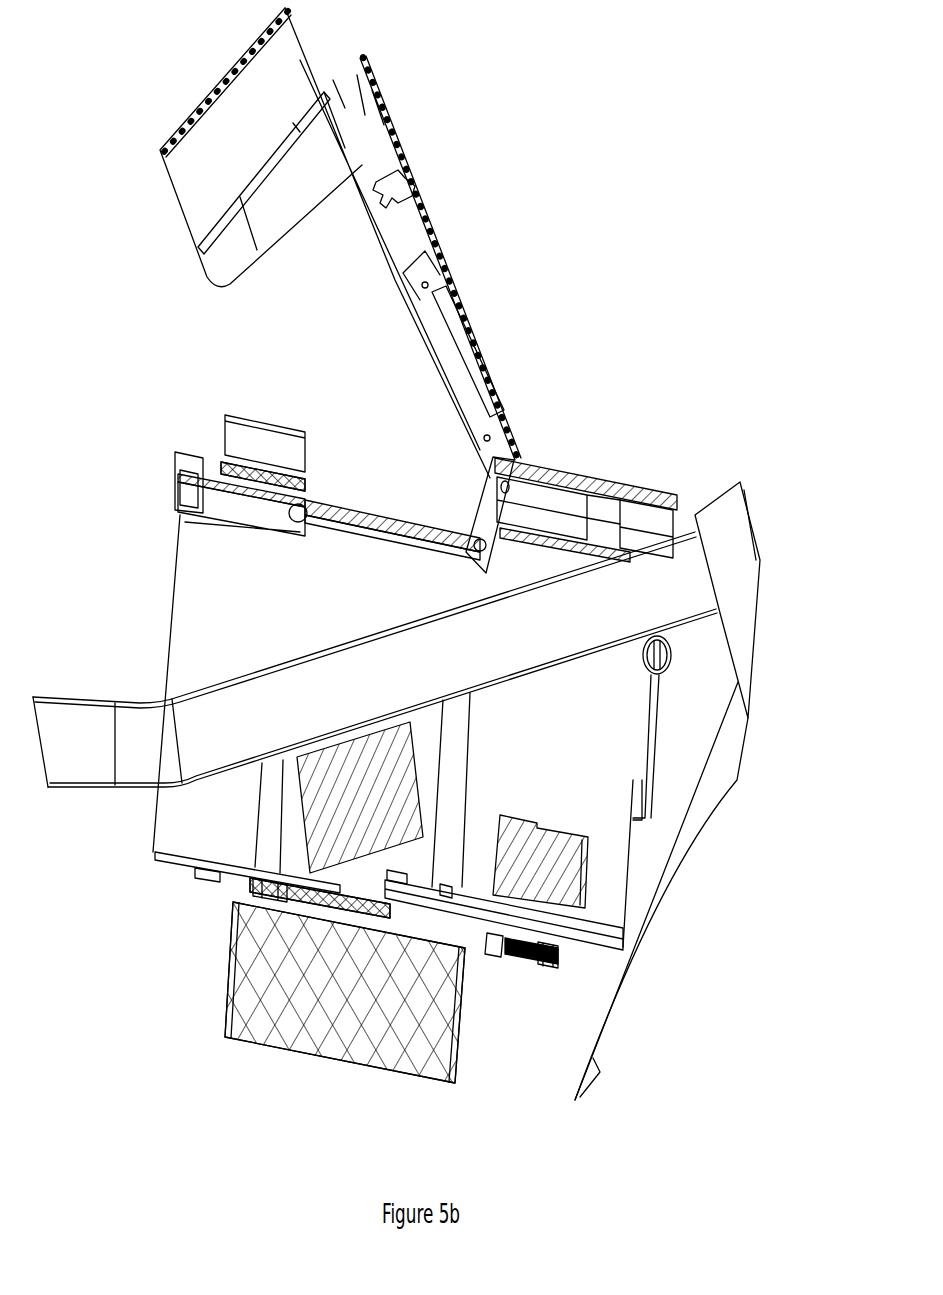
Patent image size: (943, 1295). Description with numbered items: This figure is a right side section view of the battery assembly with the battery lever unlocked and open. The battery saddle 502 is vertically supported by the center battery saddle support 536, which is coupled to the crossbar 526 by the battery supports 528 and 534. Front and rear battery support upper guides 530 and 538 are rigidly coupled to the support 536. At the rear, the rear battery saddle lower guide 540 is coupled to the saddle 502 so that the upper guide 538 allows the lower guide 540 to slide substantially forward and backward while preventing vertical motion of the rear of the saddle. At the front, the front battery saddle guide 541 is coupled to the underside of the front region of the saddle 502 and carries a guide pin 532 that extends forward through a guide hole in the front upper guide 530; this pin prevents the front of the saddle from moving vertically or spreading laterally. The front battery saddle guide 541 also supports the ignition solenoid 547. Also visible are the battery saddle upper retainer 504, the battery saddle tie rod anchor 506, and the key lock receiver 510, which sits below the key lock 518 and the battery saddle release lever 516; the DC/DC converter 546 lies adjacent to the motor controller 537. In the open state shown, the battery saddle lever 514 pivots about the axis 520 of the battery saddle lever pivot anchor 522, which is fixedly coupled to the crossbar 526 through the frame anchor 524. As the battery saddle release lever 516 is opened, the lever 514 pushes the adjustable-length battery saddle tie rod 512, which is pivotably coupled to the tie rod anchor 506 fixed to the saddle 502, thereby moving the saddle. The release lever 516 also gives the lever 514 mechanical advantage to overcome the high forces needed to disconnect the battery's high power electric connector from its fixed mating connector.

The saddle 502 is at (225, 612).
The battery saddle upper retainer 504 is at (178, 475).
The battery saddle tie rod anchor 506 is at (223, 500).
The key lock receiver 510 is at (267, 442).
The adjustable-length battery saddle tie rod 512 is at (347, 520).
The battery saddle lever 514 is at (492, 517).
The battery saddle release lever 516 is at (320, 60).
The key lock 518 is at (397, 190).
The axis 520 is at (507, 488).
The battery saddle lever pivot anchor 522 is at (593, 470).
The frame anchor 524 is at (640, 522).
The crossbar 526 is at (658, 592).
The battery support 528 is at (443, 817).
The front battery support upper guide 530 is at (547, 965).
The guide pin 532 is at (520, 955).
The battery support 534 is at (272, 813).
The center battery saddle support 536 is at (300, 895).
The motor controller 537 is at (332, 1002).
The rear battery support upper guide 538 is at (225, 875).
The rear battery saddle lower guide 540 is at (207, 873).
The front battery saddle guide 541 is at (495, 943).
The DC/DC converter 546 is at (353, 800).
The ignition solenoid 547 is at (550, 855).